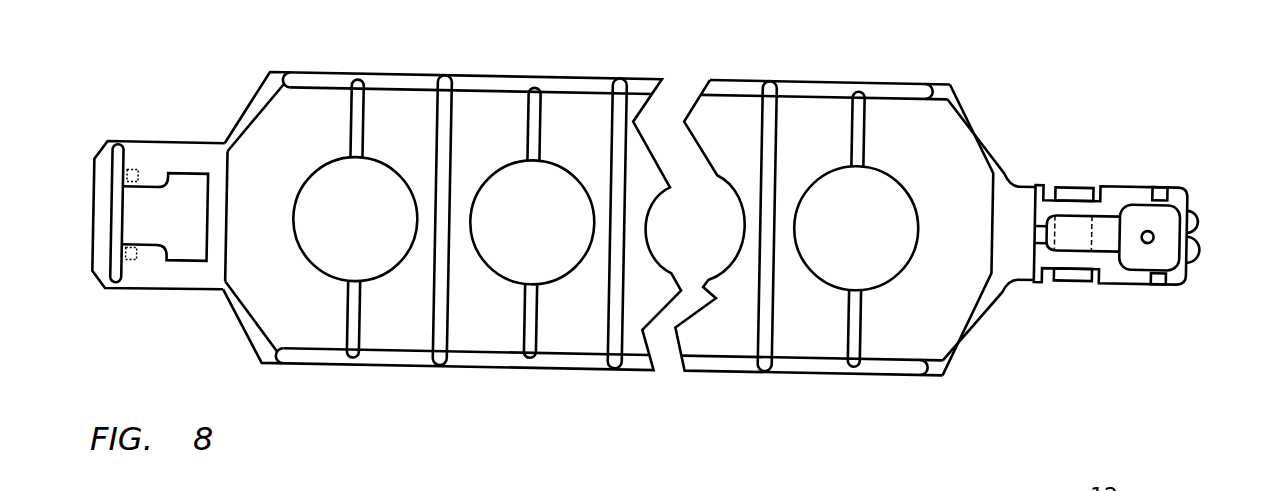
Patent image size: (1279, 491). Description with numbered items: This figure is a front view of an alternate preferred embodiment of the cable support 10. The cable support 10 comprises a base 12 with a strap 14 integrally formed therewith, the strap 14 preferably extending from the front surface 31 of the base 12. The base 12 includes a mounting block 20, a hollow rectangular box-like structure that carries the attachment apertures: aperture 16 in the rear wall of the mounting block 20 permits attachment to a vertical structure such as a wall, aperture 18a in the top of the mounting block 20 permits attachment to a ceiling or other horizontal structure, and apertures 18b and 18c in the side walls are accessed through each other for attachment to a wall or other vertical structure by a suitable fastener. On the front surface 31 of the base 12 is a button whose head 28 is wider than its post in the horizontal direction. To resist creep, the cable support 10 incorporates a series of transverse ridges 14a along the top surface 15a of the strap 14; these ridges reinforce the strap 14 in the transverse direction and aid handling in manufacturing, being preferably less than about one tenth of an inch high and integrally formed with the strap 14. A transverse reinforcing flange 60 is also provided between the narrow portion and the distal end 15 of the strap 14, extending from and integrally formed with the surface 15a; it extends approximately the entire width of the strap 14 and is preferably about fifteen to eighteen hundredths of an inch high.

The cable support 10 is at (1067, 380).
The base 12 is at (1044, 178).
The strap 14 is at (803, 108).
The transverse ridges 14a is at (833, 413).
The distal end 15 is at (100, 168).
The top surface 15a is at (975, 270).
The aperture 16 is at (1157, 234).
The aperture 18a is at (1158, 283).
The aperture 18b is at (1168, 188).
The aperture 18c is at (1200, 247).
The mounting block 20 is at (1137, 212).
The head 28 is at (1084, 190).
The front surface 31 is at (1028, 247).
The transverse reinforcing flange 60 is at (118, 148).